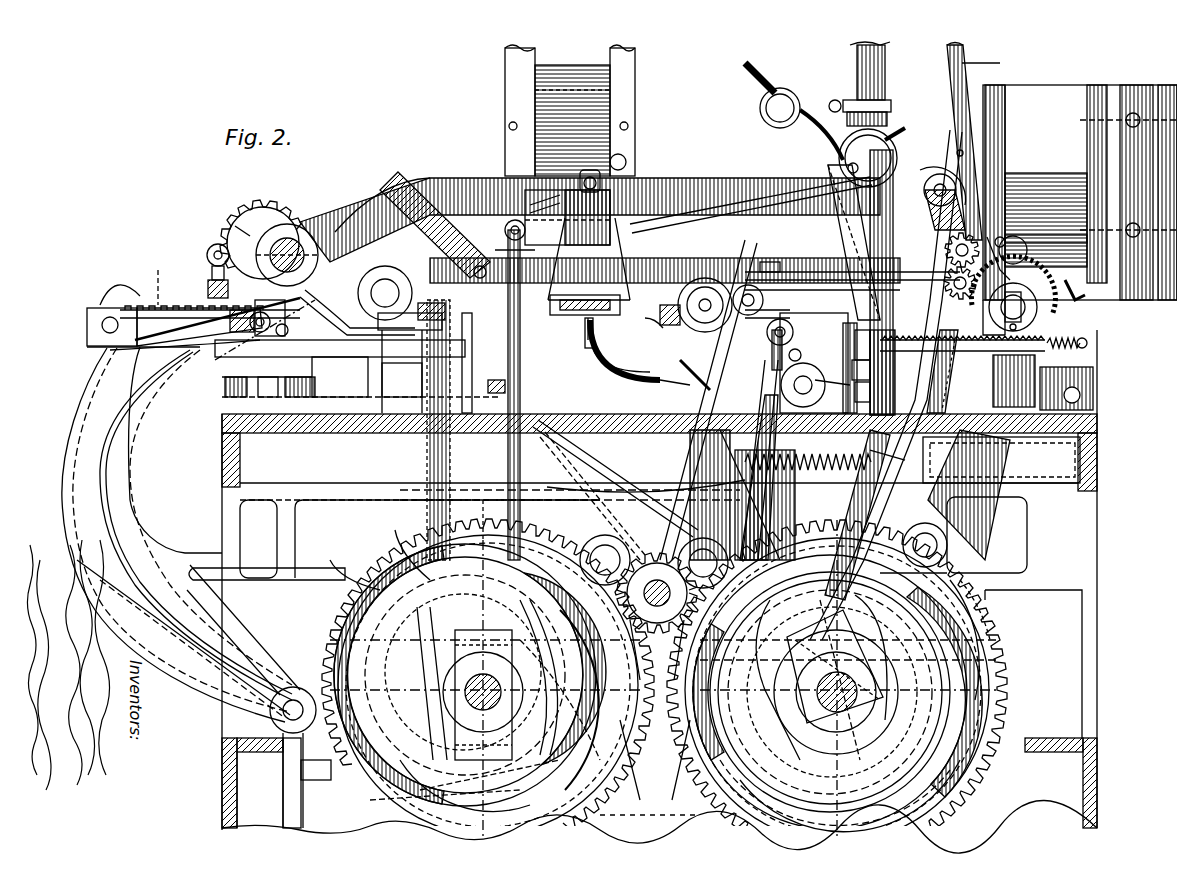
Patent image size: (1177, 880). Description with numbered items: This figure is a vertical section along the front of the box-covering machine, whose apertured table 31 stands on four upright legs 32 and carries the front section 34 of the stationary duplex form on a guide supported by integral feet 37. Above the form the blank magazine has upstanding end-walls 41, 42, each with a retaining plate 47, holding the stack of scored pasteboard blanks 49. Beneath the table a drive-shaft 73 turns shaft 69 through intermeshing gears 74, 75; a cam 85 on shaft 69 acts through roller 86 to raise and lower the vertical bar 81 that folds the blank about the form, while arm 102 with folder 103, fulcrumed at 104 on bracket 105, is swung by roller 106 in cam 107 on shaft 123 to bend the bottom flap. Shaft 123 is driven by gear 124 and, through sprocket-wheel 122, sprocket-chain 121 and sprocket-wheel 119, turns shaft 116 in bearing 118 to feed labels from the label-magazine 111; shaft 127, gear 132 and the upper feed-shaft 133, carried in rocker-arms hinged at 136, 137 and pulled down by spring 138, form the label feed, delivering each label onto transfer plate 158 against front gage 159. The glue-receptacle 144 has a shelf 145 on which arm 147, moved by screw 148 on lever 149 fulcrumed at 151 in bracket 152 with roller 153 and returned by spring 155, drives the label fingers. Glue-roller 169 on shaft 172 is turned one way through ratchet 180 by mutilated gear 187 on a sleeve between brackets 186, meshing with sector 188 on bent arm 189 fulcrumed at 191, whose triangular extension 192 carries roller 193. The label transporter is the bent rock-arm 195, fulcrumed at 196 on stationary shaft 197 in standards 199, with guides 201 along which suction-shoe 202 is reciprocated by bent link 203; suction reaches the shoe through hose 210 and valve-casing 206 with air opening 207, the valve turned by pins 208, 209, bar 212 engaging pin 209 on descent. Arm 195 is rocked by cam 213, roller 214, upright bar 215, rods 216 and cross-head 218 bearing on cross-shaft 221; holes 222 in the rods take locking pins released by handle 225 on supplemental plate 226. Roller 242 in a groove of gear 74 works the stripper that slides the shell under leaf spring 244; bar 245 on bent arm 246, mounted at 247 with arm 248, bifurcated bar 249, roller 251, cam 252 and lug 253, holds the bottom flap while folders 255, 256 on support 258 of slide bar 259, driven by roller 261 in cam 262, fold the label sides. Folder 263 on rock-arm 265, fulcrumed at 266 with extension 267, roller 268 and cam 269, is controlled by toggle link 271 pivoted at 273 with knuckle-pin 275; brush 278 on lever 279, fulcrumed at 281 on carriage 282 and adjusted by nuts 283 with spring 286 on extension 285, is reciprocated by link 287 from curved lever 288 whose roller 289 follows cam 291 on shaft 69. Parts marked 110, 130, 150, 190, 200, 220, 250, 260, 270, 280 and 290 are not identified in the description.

The table 31 is at (395, 436).
The upright legs 32 is at (222, 806).
The front section of form 34 is at (574, 329).
The integral foot 37 is at (668, 258).
The end-wall 41 is at (505, 96).
The end-wall 42 is at (635, 80).
The retaining strip 47 is at (618, 106).
The pasteboard blank 49 is at (565, 65).
The shaft 69 is at (465, 694).
The drive-shaft 73 is at (657, 593).
The gear 74 is at (650, 808).
The drive-shaft gear 75 is at (657, 621).
The vertically-disposed bar 81 is at (440, 455).
The cam 85 is at (448, 686).
The roller 86 is at (483, 535).
The arm 102 is at (600, 465).
The folder 103 is at (488, 387).
The fulcrum 104 is at (705, 548).
The bracket 105 is at (695, 467).
The roller 106 is at (948, 526).
The cam 107 is at (1000, 660).
The segment 110 is at (1072, 292).
The label-magazine 111 is at (1095, 70).
The shaft 116 is at (1040, 308).
The bearing 118 is at (1035, 318).
The sprocket-wheel 119 is at (1090, 343).
The sprocket-chain 121 is at (960, 352).
The sprocket-wheel 122 is at (990, 655).
The shaft 123 is at (815, 770).
The gear 124 is at (680, 790).
The shaft 127 is at (905, 330).
The pin 130 is at (1003, 237).
The gear 132 is at (960, 190).
The upper feed-shaft 133 is at (988, 237).
The hinge 136 is at (985, 266).
The hinge 137 is at (1046, 220).
The coil contractile spring 138 is at (1046, 228).
The glue-receptacle 144 is at (873, 391).
The ledge 145 is at (873, 345).
The arm 147 is at (870, 370).
The adjustable screw 148 is at (940, 370).
The lever 149 is at (958, 375).
The cam 150 is at (838, 795).
The fulcrum 151 is at (940, 545).
The bracket 152 is at (990, 467).
The roller 153 is at (940, 795).
The coil spring 155 is at (1095, 380).
The transfer plate 158 is at (800, 270).
The front gage 159 is at (795, 268).
The glue-roller 169 is at (745, 286).
The shaft 172 is at (703, 280).
The one-way clutch 180 is at (295, 240).
The bracket 186 is at (248, 232).
The mutilated gear 187 is at (270, 204).
The sector 188 is at (162, 279).
The bent arm 189 is at (140, 522).
The lever 190 is at (335, 603).
The fulcrum shaft 191 is at (283, 712).
The triangular extension 192 is at (300, 570).
The roller 193 is at (395, 540).
The bent rock-arm 195 is at (688, 178).
The fulcrum 196 is at (360, 286).
The stationary shaft 197 is at (385, 293).
The standard 199 is at (360, 382).
The rod 200 is at (360, 225).
The longitudinal guides 201 is at (735, 190).
The suction-shoe 202 is at (870, 237).
The bent link 203 is at (854, 242).
The valve-casing 206 is at (892, 112).
The opening 207 is at (889, 115).
The pin 208 is at (858, 133).
The pin 209 is at (909, 131).
The hose 210 is at (885, 80).
The bar 212 is at (621, 356).
The cam 213 is at (1005, 705).
The roller 214 is at (985, 605).
The upright bar 215 is at (832, 530).
The upstanding rod 216 is at (885, 445).
The cross-head 218 is at (868, 452).
The rod 220 is at (993, 63).
The cross-shaft 221 is at (937, 178).
The holes 222 is at (962, 152).
The handle 225 is at (950, 85).
The supplemental plate 226 is at (800, 130).
The roller 242 is at (335, 560).
The flat leaf spring 244 is at (580, 300).
The bar 245 is at (586, 345).
The bent arm 246 is at (625, 360).
The pivot 247 is at (835, 388).
The arm 248 is at (810, 378).
The bifurcated bar 249 is at (765, 540).
The rod 250 is at (740, 445).
The roller 251 is at (819, 677).
The cam 252 is at (850, 680).
The lug 253 is at (775, 452).
The spring-pressed folder 255 is at (533, 238).
The spring-pressed folder 256 is at (582, 242).
The support 258 is at (630, 253).
The vertical slide bar 259 is at (570, 476).
The roller 260 is at (768, 337).
The roller 261 is at (485, 683).
The cam 262 is at (585, 740).
The spring-pressed folder 263 is at (650, 320).
The rock-arm 265 is at (572, 490).
The fulcrum 266 is at (598, 548).
The downward extension 267 is at (590, 730).
The roller 268 is at (545, 765).
The cam 269 is at (483, 695).
The pin 270 is at (790, 355).
The toggle link 271 is at (690, 385).
The pivot 273 is at (640, 470).
The knuckle-pin 275 is at (660, 382).
The brush 278 is at (445, 310).
The lever 279 is at (300, 348).
The pin 280 is at (208, 254).
The fulcrum 281 is at (258, 340).
The sliding carriage 282 is at (95, 346).
The nuts 283 is at (212, 286).
The extension 285 is at (225, 335).
The coil-spring 286 is at (182, 360).
The link 287 is at (145, 298).
The curved lever 288 is at (68, 532).
The roller 289 is at (498, 790).
The post 290 is at (480, 316).
The cam 291 is at (530, 790).